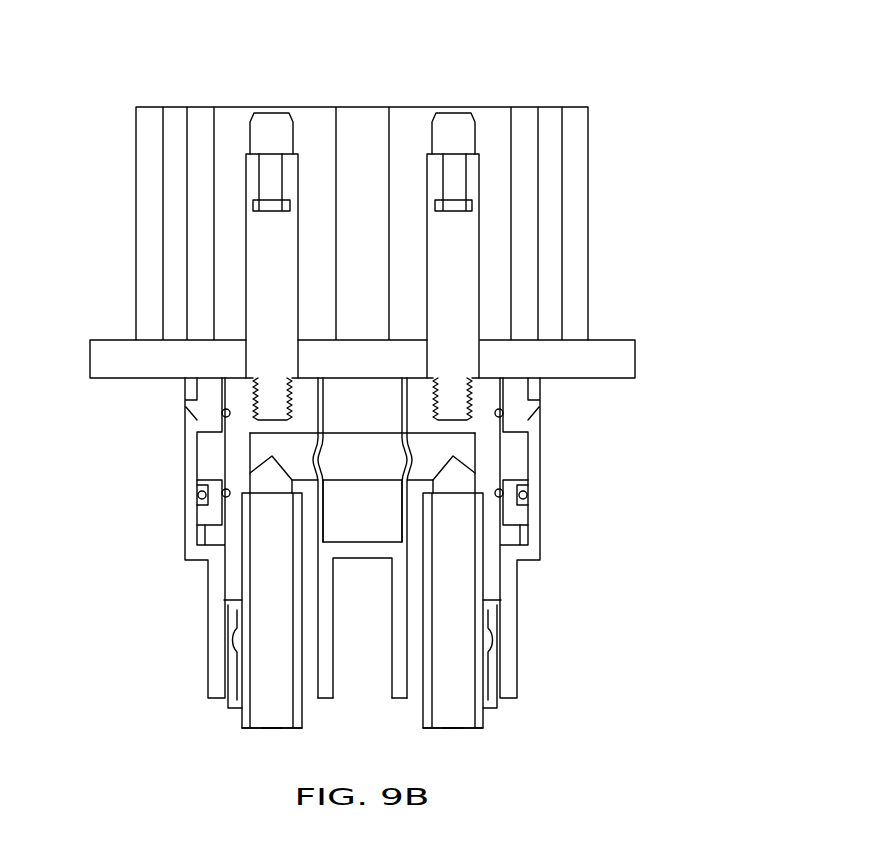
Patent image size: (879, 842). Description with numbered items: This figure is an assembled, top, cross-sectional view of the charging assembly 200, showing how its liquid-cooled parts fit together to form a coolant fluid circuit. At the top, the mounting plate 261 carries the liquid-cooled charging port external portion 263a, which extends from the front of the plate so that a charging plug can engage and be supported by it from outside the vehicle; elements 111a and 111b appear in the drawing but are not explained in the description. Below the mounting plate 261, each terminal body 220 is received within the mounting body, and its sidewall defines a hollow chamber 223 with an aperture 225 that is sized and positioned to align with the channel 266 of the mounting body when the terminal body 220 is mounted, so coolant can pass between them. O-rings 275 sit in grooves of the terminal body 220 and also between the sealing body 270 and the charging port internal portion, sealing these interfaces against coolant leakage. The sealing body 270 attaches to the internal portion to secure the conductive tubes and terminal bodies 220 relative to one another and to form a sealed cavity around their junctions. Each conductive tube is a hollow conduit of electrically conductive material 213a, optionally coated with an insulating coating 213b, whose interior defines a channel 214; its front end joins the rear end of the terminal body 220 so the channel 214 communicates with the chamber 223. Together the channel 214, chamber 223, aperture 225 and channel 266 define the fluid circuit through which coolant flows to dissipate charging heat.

The charging assembly 200 is at (153, 56).
The pin tip 111a is at (270, 112).
The pin body 111b is at (258, 252).
The liquid-cooled charging port external portion 263a is at (578, 188).
The mounting plate 261 is at (608, 362).
The O-rings 275 is at (503, 413).
The aperture 225 is at (333, 460).
The channel 266 is at (312, 466).
The hollow chamber 223 is at (248, 475).
The sealing body 270 is at (504, 475).
The terminal body 220 is at (232, 583).
The insulating coating 213b is at (235, 688).
The electrically conductive material 213a is at (240, 716).
The channel 214 is at (270, 729).